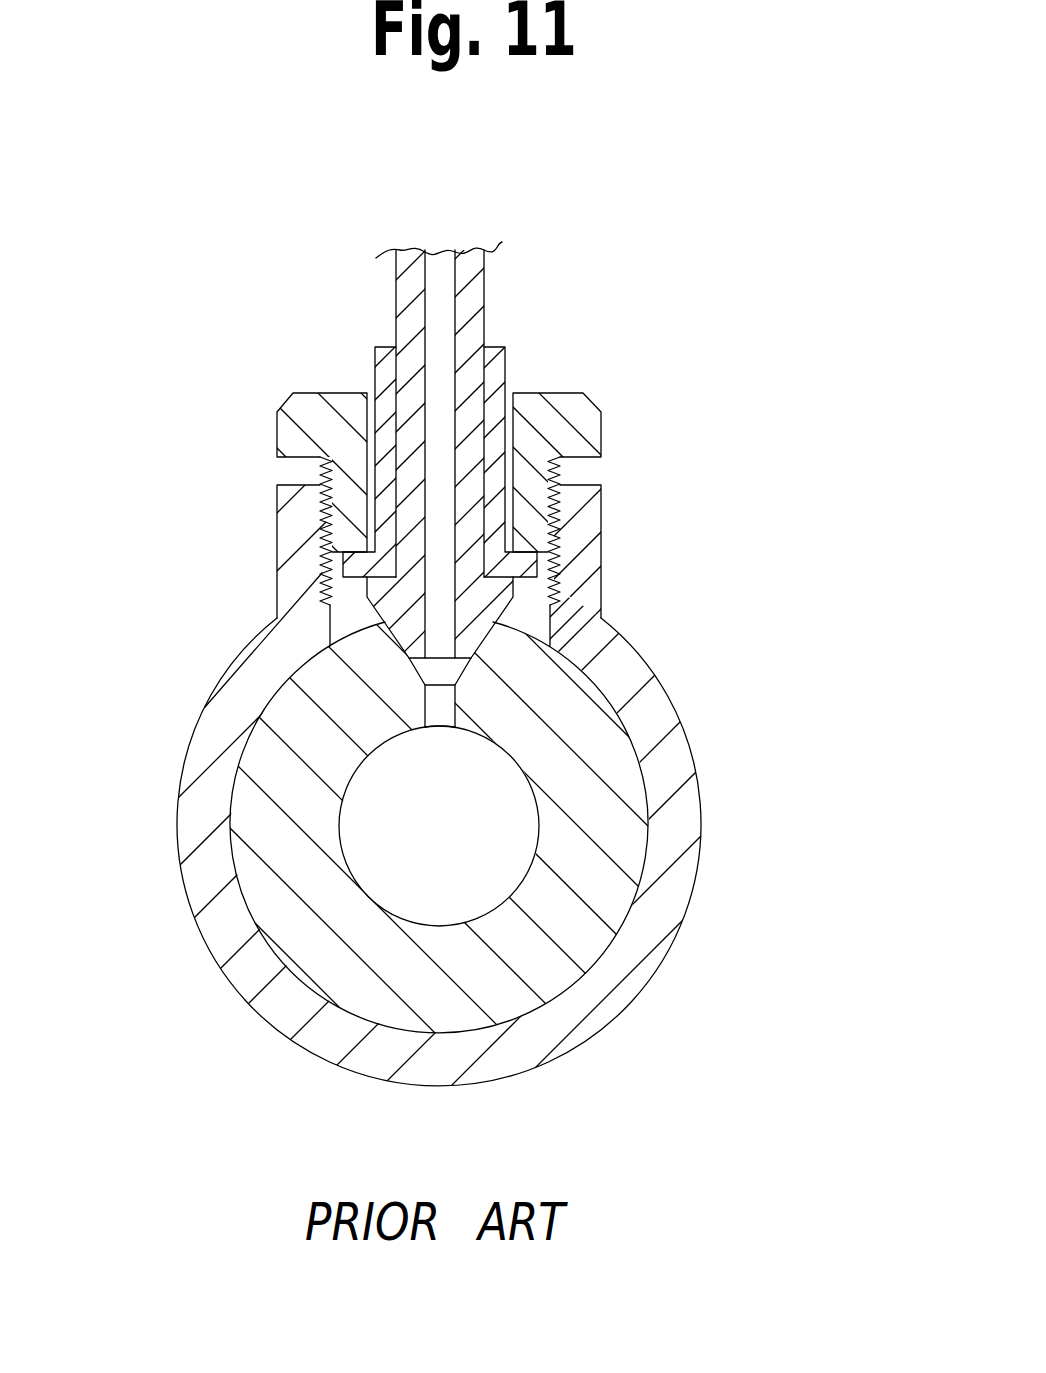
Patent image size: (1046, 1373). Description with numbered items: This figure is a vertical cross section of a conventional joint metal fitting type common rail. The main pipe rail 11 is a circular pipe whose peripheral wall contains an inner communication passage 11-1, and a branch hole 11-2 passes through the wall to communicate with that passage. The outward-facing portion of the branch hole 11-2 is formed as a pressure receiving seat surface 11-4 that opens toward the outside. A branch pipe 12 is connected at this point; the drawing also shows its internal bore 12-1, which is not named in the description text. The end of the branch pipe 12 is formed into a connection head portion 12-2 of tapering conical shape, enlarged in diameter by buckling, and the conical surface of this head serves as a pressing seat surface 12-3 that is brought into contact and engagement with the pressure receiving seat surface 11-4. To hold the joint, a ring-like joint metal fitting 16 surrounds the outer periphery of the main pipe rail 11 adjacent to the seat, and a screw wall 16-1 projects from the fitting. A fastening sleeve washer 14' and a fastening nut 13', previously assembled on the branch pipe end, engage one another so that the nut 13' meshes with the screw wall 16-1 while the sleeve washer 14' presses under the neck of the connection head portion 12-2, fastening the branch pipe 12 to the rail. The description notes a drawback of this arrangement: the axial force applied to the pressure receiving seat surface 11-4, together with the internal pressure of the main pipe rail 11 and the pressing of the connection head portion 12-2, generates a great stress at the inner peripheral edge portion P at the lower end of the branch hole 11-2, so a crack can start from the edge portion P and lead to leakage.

The main pipe rail 11 is at (613, 825).
The inner communication passage 11-1 is at (524, 878).
The branch hole 11-2 is at (444, 706).
The pressure receiving seat surface 11-4 is at (466, 671).
The branch pipe 12 is at (465, 421).
The tube bore 12-1 is at (441, 263).
The connection head portion 12-2 is at (397, 605).
The pressing seat surface 12-3 is at (505, 617).
The fastening nut 13' is at (461, 472).
The fastening sleeve washer 14' is at (444, 449).
The ring-like joint metal fitting 16 is at (193, 793).
The screw wall 16-1 is at (587, 513).
The inner peripheral edge portion P is at (436, 730).